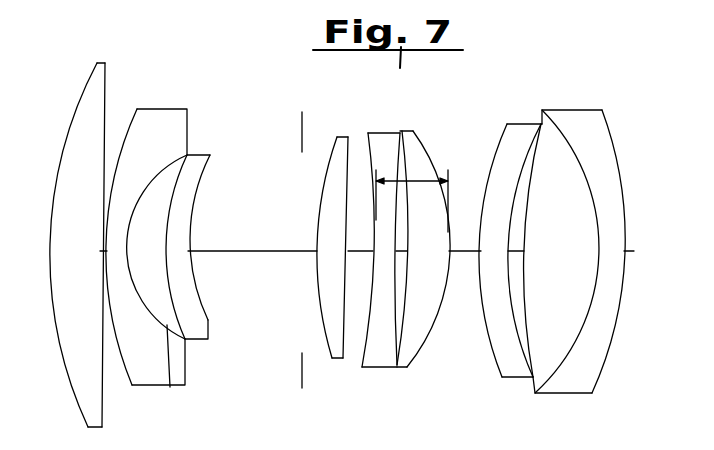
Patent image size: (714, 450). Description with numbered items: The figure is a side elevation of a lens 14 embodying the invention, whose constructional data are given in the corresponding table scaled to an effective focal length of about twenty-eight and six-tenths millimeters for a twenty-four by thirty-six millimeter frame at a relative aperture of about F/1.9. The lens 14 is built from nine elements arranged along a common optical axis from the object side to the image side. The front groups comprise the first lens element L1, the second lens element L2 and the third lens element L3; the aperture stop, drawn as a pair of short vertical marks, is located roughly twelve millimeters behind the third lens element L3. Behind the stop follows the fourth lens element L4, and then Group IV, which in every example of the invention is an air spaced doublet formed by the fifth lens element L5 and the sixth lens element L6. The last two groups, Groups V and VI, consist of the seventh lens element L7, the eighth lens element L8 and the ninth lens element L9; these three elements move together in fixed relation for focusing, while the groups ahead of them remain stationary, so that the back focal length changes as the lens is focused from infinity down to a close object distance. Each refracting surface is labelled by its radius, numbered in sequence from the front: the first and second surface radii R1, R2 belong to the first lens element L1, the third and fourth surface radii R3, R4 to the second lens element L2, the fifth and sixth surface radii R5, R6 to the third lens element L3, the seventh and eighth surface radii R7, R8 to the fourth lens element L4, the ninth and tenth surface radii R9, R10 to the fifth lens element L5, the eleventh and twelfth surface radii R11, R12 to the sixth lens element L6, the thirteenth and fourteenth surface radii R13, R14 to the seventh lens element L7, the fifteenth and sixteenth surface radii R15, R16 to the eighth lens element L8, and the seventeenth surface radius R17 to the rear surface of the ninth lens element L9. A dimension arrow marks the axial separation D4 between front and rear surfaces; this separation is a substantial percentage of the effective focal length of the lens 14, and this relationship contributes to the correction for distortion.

The lens 14 is at (537, 60).
The first lens element L1 is at (68, 224).
The second lens element L2 is at (158, 248).
The third lens element L3 is at (186, 258).
The fourth lens element L4 is at (315, 228).
The fifth lens element L5 is at (365, 252).
The sixth lens element L6 is at (429, 245).
The seventh lens element L7 is at (495, 247).
The eighth lens element L8 is at (518, 253).
The ninth lens element L9 is at (594, 252).
The first surface radius R1 is at (53, 310).
The second surface radius R2 is at (100, 353).
The third surface radius R3 is at (123, 368).
The fourth surface radius R4 is at (169, 387).
The fifth surface radius R5 is at (180, 323).
The sixth surface radius R6 is at (200, 307).
The seventh surface radius R7 is at (317, 283).
The eighth surface radius R8 is at (347, 317).
The ninth surface radius R9 is at (362, 342).
The tenth surface radius R10 is at (397, 338).
The eleventh surface radius R11 is at (397, 343).
The twelfth surface radius R12 is at (440, 334).
The thirteenth surface radius R13 is at (481, 284).
The fourteenth surface radius R14 is at (515, 338).
The fifteenth surface radius R15 is at (526, 357).
The sixteenth surface radius R16 is at (558, 357).
The seventeenth surface radius R17 is at (619, 308).
The axial separation D4 is at (412, 201).